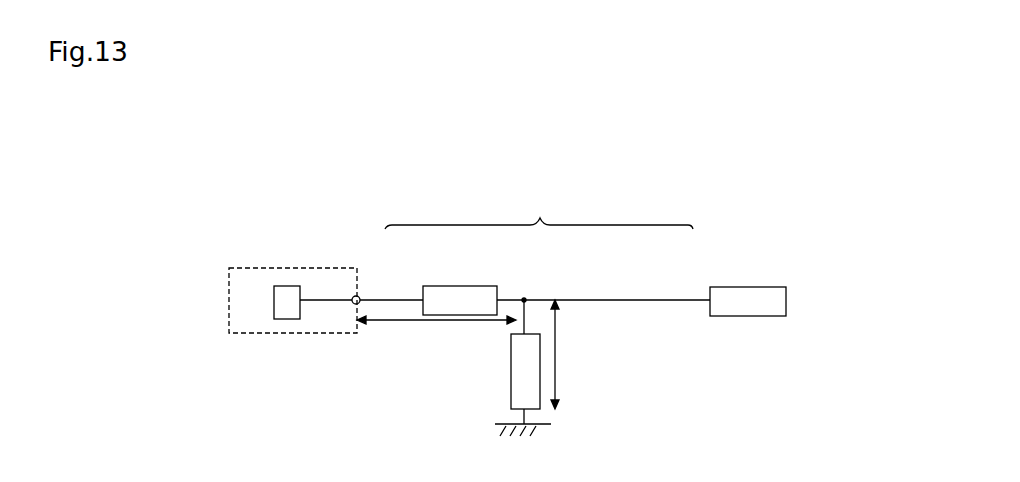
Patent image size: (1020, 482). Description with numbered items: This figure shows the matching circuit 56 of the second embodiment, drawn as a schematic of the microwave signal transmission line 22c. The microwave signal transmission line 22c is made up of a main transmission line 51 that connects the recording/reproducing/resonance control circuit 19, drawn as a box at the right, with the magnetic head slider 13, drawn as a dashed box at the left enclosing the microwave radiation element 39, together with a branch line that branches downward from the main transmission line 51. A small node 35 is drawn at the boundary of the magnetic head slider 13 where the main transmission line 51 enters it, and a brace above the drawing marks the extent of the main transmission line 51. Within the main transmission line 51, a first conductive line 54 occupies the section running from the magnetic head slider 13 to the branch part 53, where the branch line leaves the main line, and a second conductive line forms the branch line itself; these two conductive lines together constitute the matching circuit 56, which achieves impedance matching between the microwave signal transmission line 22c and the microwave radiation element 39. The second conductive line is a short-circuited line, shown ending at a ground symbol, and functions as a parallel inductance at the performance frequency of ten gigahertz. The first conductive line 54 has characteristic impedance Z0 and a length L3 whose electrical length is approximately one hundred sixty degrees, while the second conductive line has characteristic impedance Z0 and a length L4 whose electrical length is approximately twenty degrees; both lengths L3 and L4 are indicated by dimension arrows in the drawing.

The magnetic head slider 13 is at (337, 266).
The microwave radiation element 39 is at (288, 285).
The feed point 35 is at (359, 295).
The first conductive line 54 is at (457, 299).
The branch part 53 is at (524, 298).
The recording/reproducing/resonance control circuit 19 is at (742, 298).
The main transmission line 51 is at (539, 209).
The microwave signal transmission line 22c is at (596, 197).
The matching circuit 56 is at (486, 356).
The length of first conductive line L3 is at (436, 330).
The length of second conductive line L4 is at (567, 354).